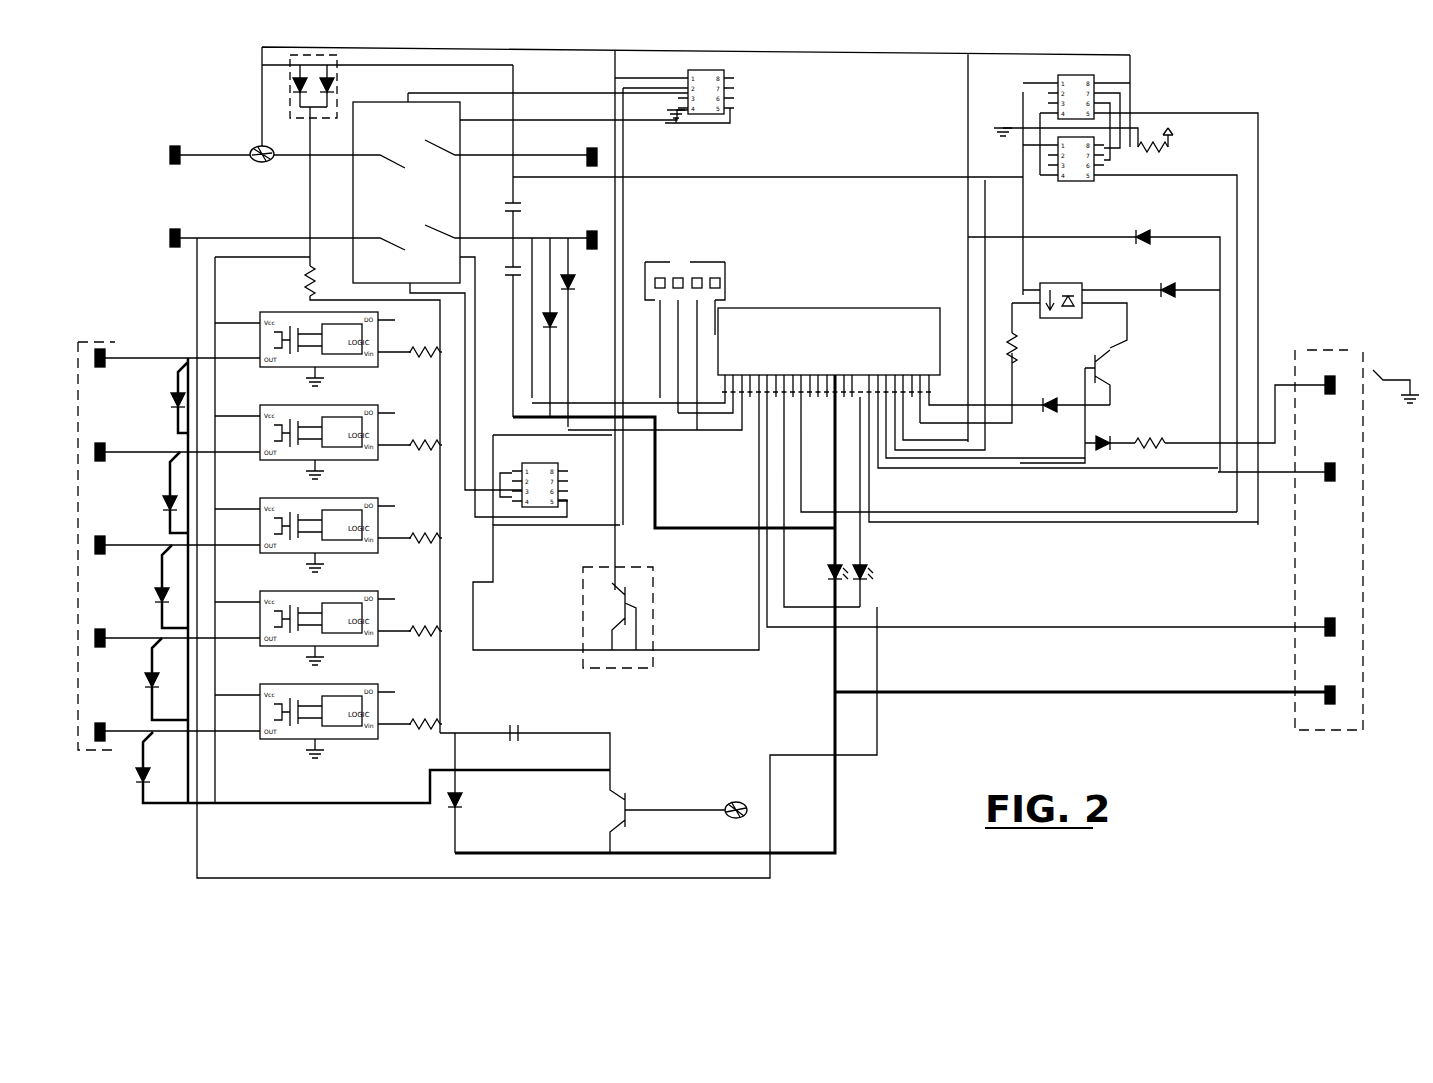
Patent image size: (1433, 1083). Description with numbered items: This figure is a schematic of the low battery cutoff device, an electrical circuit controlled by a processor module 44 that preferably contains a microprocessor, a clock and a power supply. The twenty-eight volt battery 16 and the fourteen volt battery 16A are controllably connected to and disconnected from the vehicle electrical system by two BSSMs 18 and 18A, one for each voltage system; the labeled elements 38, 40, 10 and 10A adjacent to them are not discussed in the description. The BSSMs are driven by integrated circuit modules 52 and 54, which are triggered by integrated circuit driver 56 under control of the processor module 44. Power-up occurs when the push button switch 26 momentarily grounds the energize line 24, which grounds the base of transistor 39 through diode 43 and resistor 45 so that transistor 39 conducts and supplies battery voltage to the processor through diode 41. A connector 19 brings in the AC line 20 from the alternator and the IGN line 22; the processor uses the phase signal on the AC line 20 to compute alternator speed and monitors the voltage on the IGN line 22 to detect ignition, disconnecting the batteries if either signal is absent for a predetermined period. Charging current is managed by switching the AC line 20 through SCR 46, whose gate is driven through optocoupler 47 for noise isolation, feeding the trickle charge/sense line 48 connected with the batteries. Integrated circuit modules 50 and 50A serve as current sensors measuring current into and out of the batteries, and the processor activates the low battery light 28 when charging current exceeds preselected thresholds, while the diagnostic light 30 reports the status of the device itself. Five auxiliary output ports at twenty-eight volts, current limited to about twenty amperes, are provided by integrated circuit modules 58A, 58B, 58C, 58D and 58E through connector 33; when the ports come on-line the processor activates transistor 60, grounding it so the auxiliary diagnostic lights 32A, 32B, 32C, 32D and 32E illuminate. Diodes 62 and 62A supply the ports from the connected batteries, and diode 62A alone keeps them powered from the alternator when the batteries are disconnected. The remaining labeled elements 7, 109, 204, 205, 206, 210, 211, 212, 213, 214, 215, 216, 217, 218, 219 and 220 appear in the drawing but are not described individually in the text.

The terminal 7 is at (1320, 685).
The 24V output terminal 10 is at (590, 150).
The 12V output terminal 10A is at (606, 223).
The battery 16 is at (241, 153).
The battery 16A is at (235, 236).
The BSSM 18 is at (520, 188).
The BSSM 18A is at (470, 370).
The connector 19 is at (1329, 527).
The AC line 20 is at (1276, 477).
The IGN line 22 is at (1319, 621).
The energize line 24 is at (1319, 390).
The push button switch 26 is at (1383, 362).
The Low Battery Light 28 is at (829, 572).
The LBCD Diagnostic light 30 is at (865, 502).
The auxiliary diagnostic light 32A is at (165, 580).
The auxiliary diagnostic light 32B is at (165, 492).
The auxiliary diagnostic light 32C is at (161, 586).
The auxiliary diagnostic light 32D is at (156, 679).
The auxiliary diagnostic light 32E is at (364, 767).
The connector 33 is at (476, 558).
The relay contact 38 is at (477, 156).
The transistor 39 is at (1074, 399).
The relay contact 40 is at (464, 232).
The diode 41 is at (1070, 395).
The diode 43 is at (1110, 431).
The processor module 44 is at (890, 516).
The resistor 45 is at (1230, 416).
The SCR 46 is at (1147, 228).
The optocoupler 47 is at (1086, 304).
The trickle charge/sense line 48 is at (696, 318).
The integrated circuit module 50 is at (1126, 287).
The integrated circuit module 50A is at (1130, 324).
The integrated circuit module 52 is at (674, 284).
The integrated circuit module 54 is at (552, 480).
The integrated circuit driver 56 is at (600, 567).
The integrated circuit module 58A is at (328, 342).
The integrated circuit module 58B is at (328, 435).
The integrated circuit module 58C is at (328, 528).
The integrated circuit module 58D is at (328, 621).
The integrated circuit module 58E is at (328, 714).
The transistor 60 is at (668, 812).
The diode 62 is at (387, 86).
The diode 62A is at (338, 161).
The capacitor 109 is at (525, 720).
The capacitor 204 is at (764, 166).
The capacitor 205 is at (495, 331).
The diode 206 is at (1189, 280).
The diode 210 is at (472, 793).
The diode 211 is at (586, 332).
The diode 212 is at (542, 327).
The resistor 213 is at (327, 529).
The resistor 214 is at (420, 341).
The resistor 215 is at (420, 434).
The resistor 216 is at (420, 527).
The resistor 217 is at (420, 620).
The resistor 218 is at (506, 737).
The resistor 219 is at (1158, 145).
The connector 220 is at (847, 334).